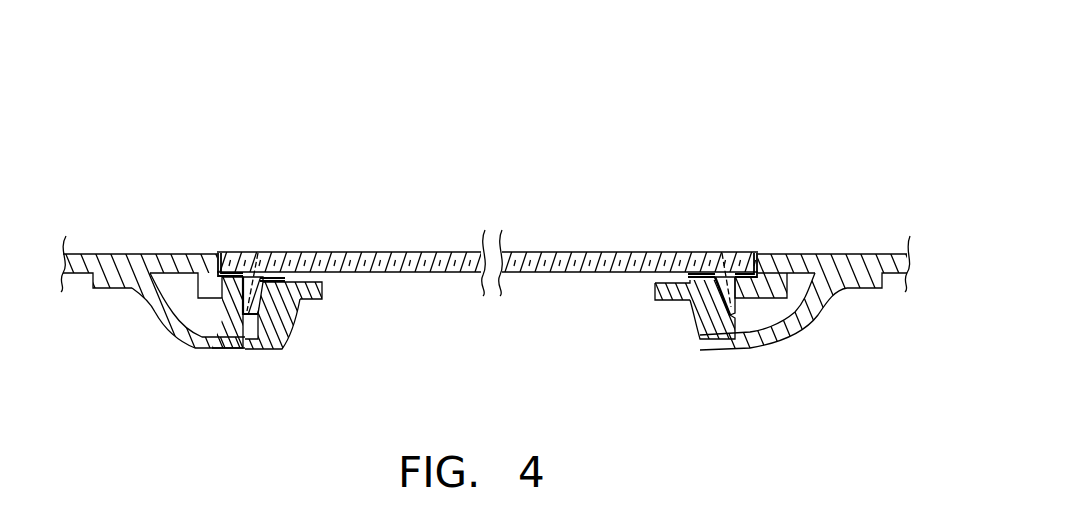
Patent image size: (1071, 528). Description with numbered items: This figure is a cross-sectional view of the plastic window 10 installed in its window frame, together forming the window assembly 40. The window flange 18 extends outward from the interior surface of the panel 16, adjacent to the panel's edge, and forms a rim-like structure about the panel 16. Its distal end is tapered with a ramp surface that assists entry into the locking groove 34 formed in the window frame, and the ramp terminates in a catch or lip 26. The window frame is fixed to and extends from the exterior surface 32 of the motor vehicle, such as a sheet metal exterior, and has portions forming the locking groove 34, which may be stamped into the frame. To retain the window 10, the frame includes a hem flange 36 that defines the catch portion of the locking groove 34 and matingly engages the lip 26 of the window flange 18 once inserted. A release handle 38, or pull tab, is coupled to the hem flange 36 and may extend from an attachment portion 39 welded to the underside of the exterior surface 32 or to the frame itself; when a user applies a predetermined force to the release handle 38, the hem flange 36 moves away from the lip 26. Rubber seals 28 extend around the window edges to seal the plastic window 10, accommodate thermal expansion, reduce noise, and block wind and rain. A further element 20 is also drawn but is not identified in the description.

The plastic window 10 is at (418, 252).
The panel 16 is at (510, 250).
The window flange 18 is at (255, 255).
The clip 20 is at (680, 271).
The lip 26 is at (263, 316).
The rubber seals 28 is at (217, 253).
The exterior surface 32 is at (828, 256).
The locking groove 34 is at (267, 318).
The hem flange 36 is at (272, 283).
The release handle 38 is at (312, 302).
The attachment portion 39 is at (848, 288).
The window assembly 40 is at (413, 167).